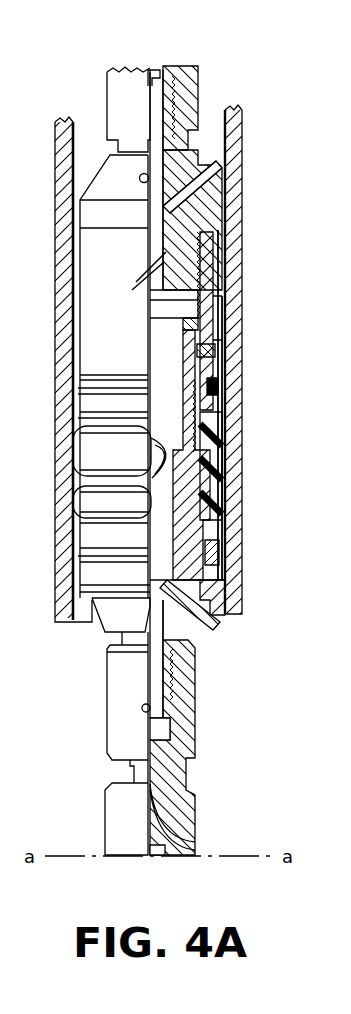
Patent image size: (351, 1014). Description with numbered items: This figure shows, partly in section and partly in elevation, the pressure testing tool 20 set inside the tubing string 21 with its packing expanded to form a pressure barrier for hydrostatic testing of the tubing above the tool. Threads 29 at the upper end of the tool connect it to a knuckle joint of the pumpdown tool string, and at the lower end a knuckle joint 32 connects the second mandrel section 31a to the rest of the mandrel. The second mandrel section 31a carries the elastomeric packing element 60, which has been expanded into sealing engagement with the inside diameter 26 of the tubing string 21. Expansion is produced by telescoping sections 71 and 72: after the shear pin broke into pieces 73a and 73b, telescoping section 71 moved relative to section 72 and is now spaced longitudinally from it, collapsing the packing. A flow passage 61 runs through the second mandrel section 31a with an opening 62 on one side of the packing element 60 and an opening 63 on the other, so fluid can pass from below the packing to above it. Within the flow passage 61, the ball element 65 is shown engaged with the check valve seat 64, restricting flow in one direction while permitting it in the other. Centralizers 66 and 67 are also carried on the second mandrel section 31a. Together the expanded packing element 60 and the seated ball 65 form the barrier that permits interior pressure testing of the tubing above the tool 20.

The pressure testing tool 20 is at (213, 63).
The tubing string 21 is at (237, 132).
The inside diameter of the tubing string 26 is at (77, 130).
The threads 29 is at (205, 100).
The second mandrel section 31a is at (200, 576).
The knuckle joint 32 is at (118, 698).
The packing element 60 is at (216, 447).
The flow passage 61 is at (165, 372).
The opening 62 is at (200, 176).
The opening 63 is at (210, 631).
The check valve seat 64 is at (175, 492).
The ball element 65 is at (160, 462).
The centralizer 66 is at (216, 372).
The centralizer 67 is at (208, 558).
The telescoping section 71 is at (206, 285).
The telescoping section 72 is at (216, 395).
The sheared pin piece 73a is at (219, 312).
The sheared pin piece 73b is at (216, 344).